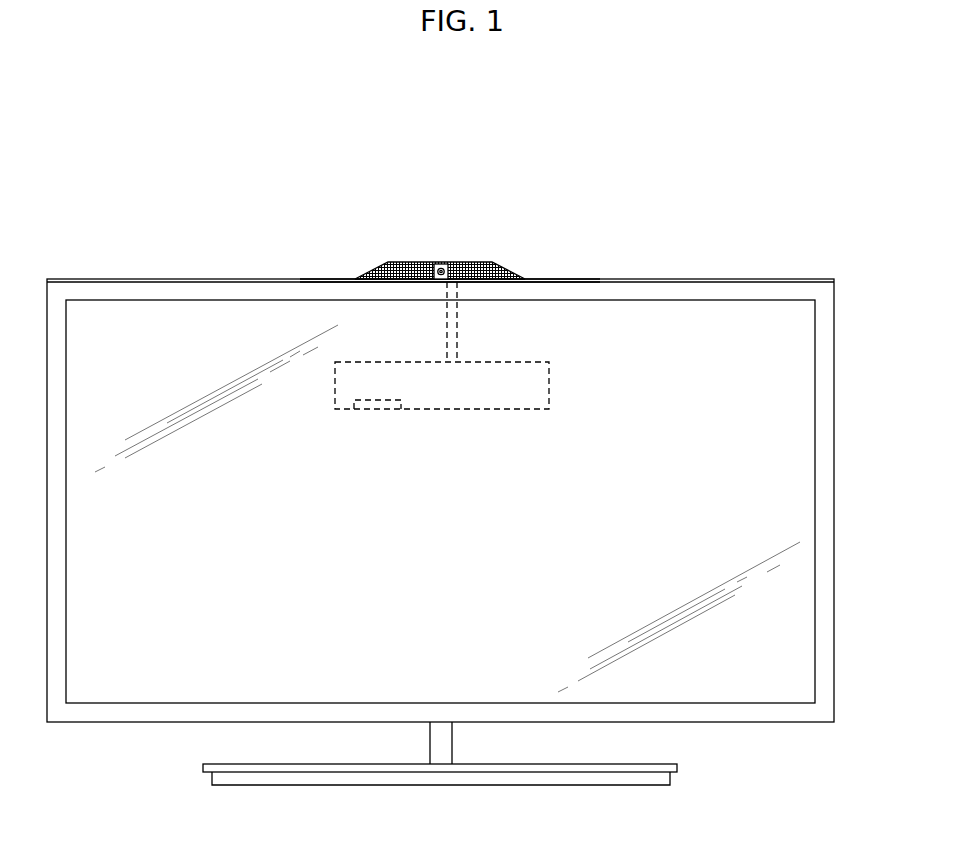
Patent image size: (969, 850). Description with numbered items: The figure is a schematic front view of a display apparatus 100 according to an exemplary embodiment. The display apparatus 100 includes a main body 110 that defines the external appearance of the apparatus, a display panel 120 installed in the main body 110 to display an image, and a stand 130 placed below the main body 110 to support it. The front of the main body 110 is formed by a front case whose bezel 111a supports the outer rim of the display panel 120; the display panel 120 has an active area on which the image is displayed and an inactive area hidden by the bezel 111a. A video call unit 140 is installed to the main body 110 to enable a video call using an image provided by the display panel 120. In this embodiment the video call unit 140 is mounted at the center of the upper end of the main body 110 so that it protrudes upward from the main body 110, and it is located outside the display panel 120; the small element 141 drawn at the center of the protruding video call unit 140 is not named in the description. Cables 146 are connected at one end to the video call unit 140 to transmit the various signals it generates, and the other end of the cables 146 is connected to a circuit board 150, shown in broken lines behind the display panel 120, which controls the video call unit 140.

The display apparatus 100 is at (465, 156).
The main body 110 is at (472, 500).
The bezel 111a is at (751, 292).
The display panel 120 is at (783, 468).
The stand 130 is at (690, 773).
The video call unit 140 is at (469, 258).
The camera lens 141 is at (437, 262).
The cables 146 is at (453, 330).
The circuit board 150 is at (540, 383).